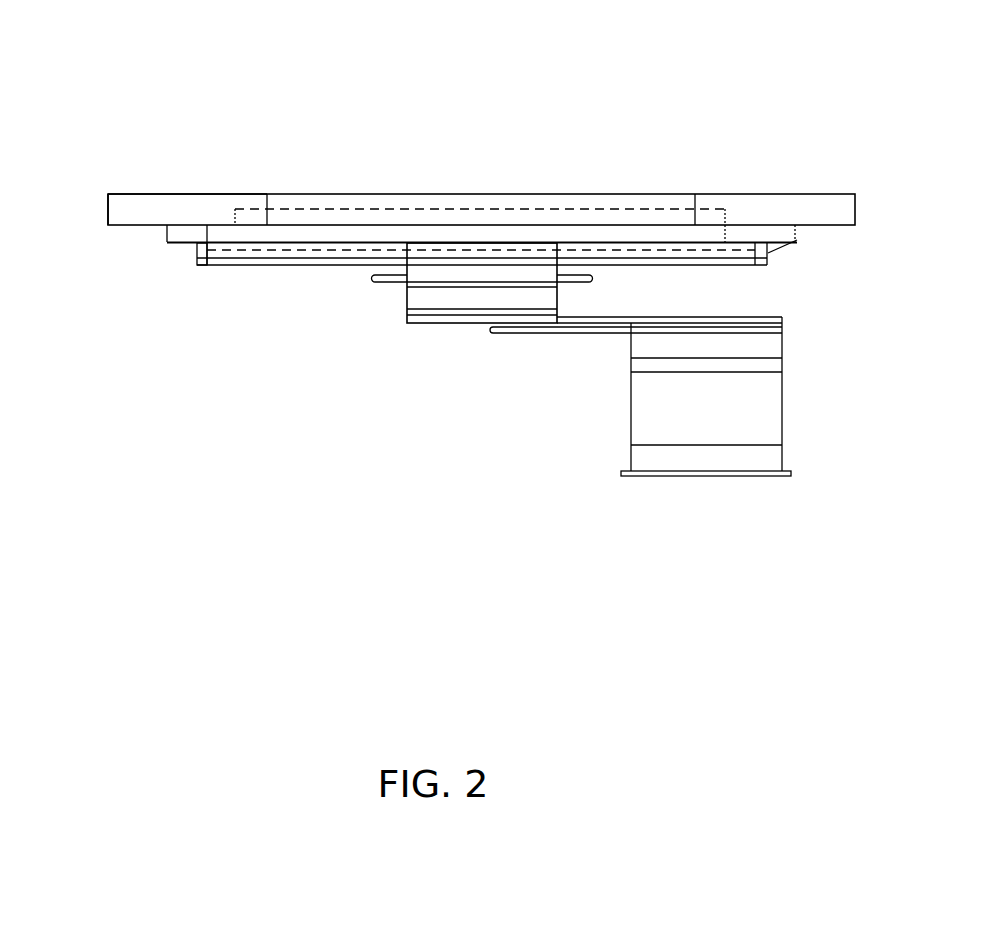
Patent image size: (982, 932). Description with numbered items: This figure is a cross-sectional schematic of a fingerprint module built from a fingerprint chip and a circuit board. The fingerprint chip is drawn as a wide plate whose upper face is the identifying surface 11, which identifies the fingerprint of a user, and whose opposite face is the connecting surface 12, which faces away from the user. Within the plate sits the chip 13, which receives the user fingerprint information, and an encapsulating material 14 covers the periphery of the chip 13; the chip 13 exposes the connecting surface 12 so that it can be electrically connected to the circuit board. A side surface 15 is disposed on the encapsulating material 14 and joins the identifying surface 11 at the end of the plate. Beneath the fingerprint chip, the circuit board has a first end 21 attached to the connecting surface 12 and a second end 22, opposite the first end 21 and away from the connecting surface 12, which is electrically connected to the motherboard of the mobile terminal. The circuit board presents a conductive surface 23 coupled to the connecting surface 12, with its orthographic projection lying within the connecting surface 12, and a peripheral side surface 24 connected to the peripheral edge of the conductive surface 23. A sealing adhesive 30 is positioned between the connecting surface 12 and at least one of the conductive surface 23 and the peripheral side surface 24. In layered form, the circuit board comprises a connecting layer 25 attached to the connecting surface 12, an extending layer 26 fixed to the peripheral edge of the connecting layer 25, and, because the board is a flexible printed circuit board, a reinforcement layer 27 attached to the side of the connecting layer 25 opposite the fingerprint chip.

The identifying surface 11 is at (640, 195).
The connecting surface 12 is at (332, 240).
The chip 13 is at (297, 208).
The encapsulating material 14 is at (180, 208).
The side surface 15 is at (107, 211).
The first end 21 is at (302, 278).
The second end 22 is at (590, 463).
The conductive surface 23 is at (275, 240).
The peripheral side surface 24 is at (197, 250).
The connecting layer 25 is at (765, 250).
The extending layer 26 is at (423, 253).
The reinforcement layer 27 is at (692, 257).
The sealing adhesive 30 is at (197, 246).